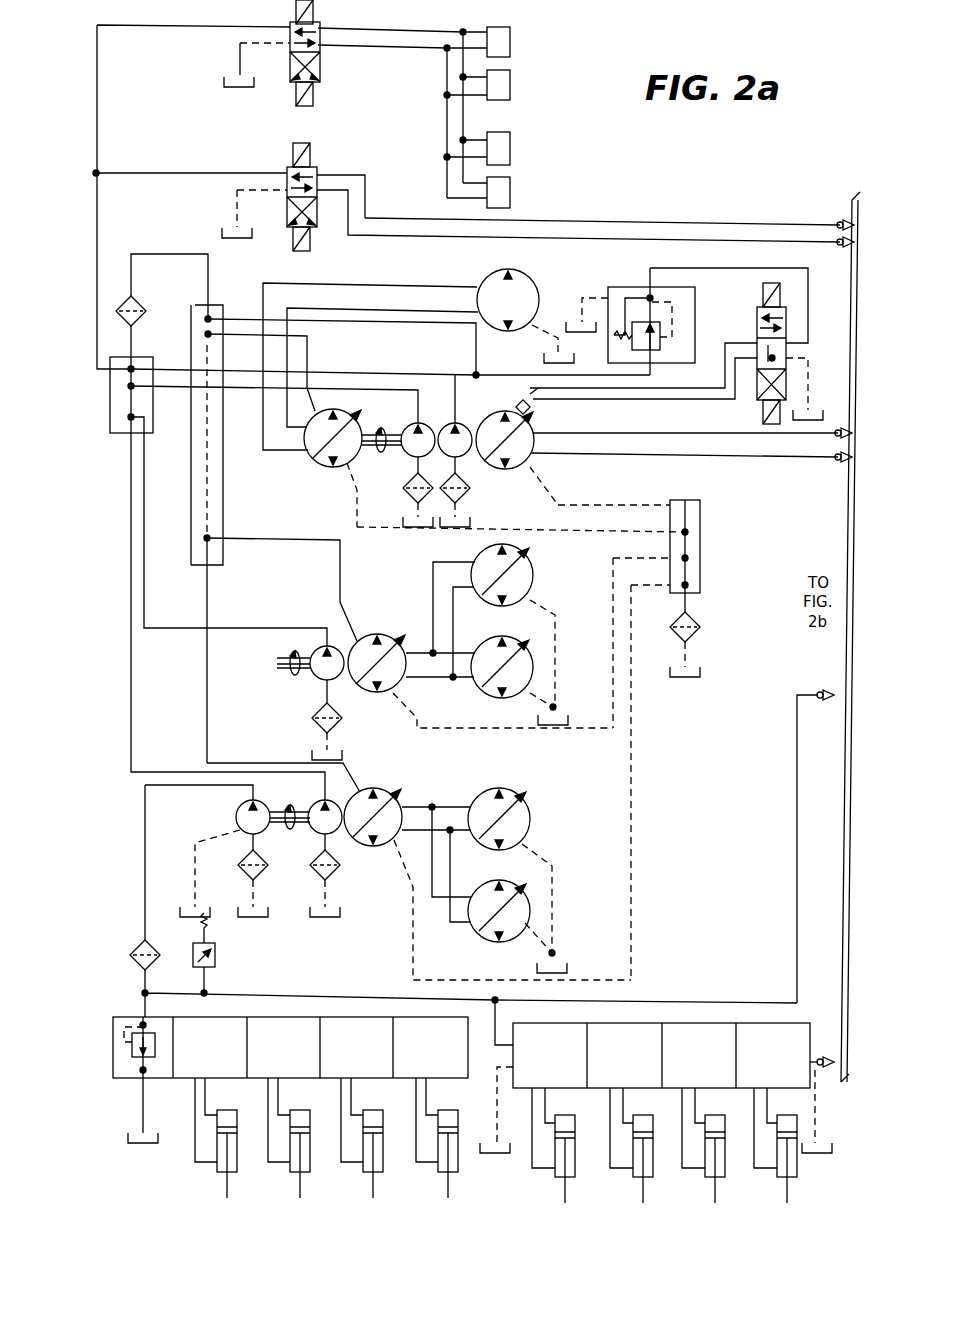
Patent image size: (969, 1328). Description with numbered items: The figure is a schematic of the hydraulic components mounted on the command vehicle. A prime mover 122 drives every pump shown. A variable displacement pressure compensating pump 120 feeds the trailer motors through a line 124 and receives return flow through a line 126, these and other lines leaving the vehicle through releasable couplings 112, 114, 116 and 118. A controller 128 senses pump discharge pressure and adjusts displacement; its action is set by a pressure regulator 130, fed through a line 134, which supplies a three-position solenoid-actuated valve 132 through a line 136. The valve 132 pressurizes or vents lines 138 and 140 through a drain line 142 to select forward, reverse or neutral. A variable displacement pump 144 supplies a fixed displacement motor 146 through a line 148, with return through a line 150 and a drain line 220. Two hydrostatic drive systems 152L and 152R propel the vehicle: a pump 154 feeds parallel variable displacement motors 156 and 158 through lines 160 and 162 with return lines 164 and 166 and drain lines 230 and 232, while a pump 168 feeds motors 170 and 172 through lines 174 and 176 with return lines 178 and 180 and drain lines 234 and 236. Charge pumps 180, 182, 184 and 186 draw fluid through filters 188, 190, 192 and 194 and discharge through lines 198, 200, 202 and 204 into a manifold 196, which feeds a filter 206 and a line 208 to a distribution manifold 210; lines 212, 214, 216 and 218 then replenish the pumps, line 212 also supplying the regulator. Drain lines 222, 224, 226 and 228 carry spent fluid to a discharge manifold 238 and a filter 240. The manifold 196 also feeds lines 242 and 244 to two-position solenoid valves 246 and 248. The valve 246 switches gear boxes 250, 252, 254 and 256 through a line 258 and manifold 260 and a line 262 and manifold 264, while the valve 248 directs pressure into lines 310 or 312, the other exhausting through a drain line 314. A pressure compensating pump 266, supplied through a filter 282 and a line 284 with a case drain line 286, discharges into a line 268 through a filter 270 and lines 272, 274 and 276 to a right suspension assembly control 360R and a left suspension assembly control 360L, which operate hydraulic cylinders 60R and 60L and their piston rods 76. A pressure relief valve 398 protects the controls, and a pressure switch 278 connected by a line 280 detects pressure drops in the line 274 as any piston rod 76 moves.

The line 242 is at (97, 130).
The line 244 is at (145, 173).
The gear box control valve 246 is at (290, 18).
The solenoid-actuated valve 248 is at (290, 160).
The gear box 250 is at (512, 37).
The gear box 252 is at (512, 80).
The gear box 254 is at (512, 144).
The gear box 256 is at (512, 187).
The line 258 is at (355, 30).
The manifold 260 is at (460, 67).
The line 262 is at (398, 55).
The manifold 264 is at (447, 117).
The drain line 314 is at (237, 210).
The line 208 is at (205, 258).
The filter 206 is at (150, 296).
The line 212 is at (262, 313).
The line 214 is at (252, 336).
The manifold 196 is at (110, 440).
The line 198 is at (364, 370).
The line 200 is at (428, 370).
The line 150 is at (378, 306).
The fixed displacement motor 146 is at (490, 278).
The drain line 220 is at (548, 338).
The pressure regulator 130 is at (630, 287).
The line 134 is at (650, 376).
The 3-position solenoid-actuated valve 132 is at (757, 316).
The line 136 is at (808, 310).
The drain line 142 is at (808, 370).
The line 140 is at (626, 392).
The line 138 is at (694, 399).
The line 310 is at (586, 222).
The line 312 is at (644, 240).
The releasable coupling 114 is at (830, 225).
The releasable coupling 112 is at (830, 242).
The line 124 is at (730, 434).
The line 126 is at (720, 458).
The releasable coupling 116 is at (830, 460).
The releasable coupling 118 is at (828, 501).
The charge pump 182 is at (412, 420).
The charge pump 180 is at (444, 420).
The controller 128 is at (518, 402).
The variable displacement pressure compensating pump 120 is at (530, 470).
The line 148 is at (292, 460).
The variable displacement hydraulic pump 144 is at (340, 476).
The prime mover 122 is at (380, 452).
The hydraulic fluid filter 190 is at (406, 494).
The hydraulic fluid filter 188 is at (466, 490).
The drain line 222 is at (612, 505).
The drain line 224 is at (606, 532).
The drain line 226 is at (656, 564).
The drain line 228 is at (656, 590).
The discharge manifold 238 is at (700, 568).
The filter 240 is at (696, 636).
The line 216 is at (298, 542).
The distribution manifold 210 is at (192, 568).
The line 202 is at (196, 632).
The line 162 is at (472, 562).
The hydrostatic drive system 152L is at (436, 622).
The variable displacement motor 156 is at (532, 572).
The line 160 is at (440, 630).
The line 164 is at (453, 608).
The drain line 230 is at (546, 604).
The variable displacement motor 158 is at (542, 652).
The drain line 232 is at (545, 690).
The line 204 is at (130, 706).
The line 218 is at (207, 720).
The charge pump 184 is at (312, 676).
The hydraulic fluid filter 192 is at (315, 725).
The variable displacement hydraulic pump 154 is at (394, 692).
The line 166 is at (420, 700).
The variable displacement hydraulic pump 168 is at (398, 784).
The hydrostatic drive system 152R is at (478, 780).
The variable displacement motor 172 is at (528, 815).
The line 174 is at (462, 836).
The variable displacement motor 170 is at (540, 937).
The line 176 is at (478, 930).
The drain line 234 is at (552, 905).
The drain line 236 is at (528, 948).
The line 268 is at (145, 818).
The variable displacement pressure compensating pump 266 is at (236, 820).
The line 284 is at (260, 850).
The drain line 286 is at (200, 868).
The filter 282 is at (266, 887).
The charge pump 186 is at (340, 862).
The hydraulic fluid filter 194 is at (340, 900).
The line 178 is at (418, 912).
The filter 270 is at (130, 952).
The pressure switch 278 is at (216, 952).
The line 272 is at (140, 996).
The line 280 is at (212, 984).
The right suspension assembly control 360R is at (356, 982).
The line 274 is at (412, 992).
The line 276 is at (493, 1006).
The left suspension assembly control 360L is at (736, 992).
The pressure relief valve 398 is at (113, 1046).
The hydraulic cylinder 60R is at (478, 1100).
The hydraulic cylinder 60L is at (592, 1104).
The piston rod 76 is at (227, 1196).